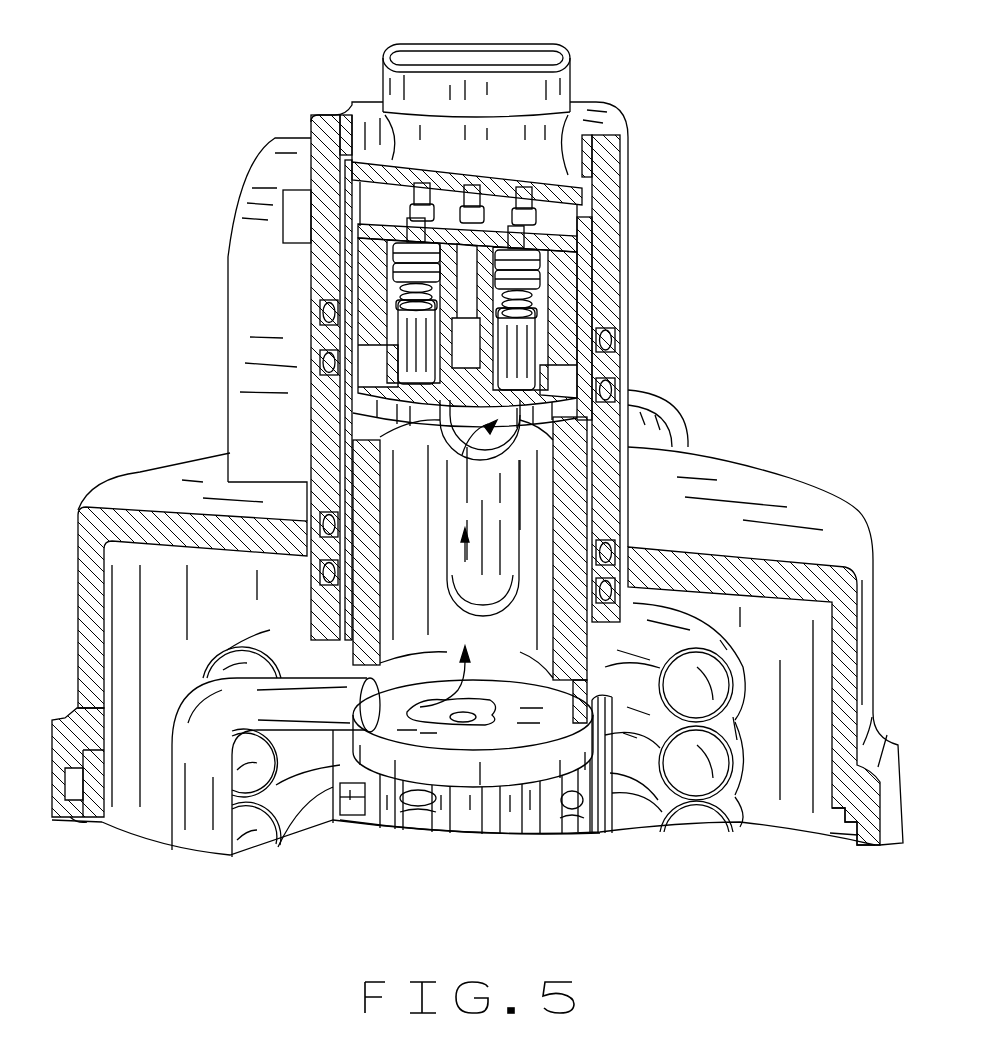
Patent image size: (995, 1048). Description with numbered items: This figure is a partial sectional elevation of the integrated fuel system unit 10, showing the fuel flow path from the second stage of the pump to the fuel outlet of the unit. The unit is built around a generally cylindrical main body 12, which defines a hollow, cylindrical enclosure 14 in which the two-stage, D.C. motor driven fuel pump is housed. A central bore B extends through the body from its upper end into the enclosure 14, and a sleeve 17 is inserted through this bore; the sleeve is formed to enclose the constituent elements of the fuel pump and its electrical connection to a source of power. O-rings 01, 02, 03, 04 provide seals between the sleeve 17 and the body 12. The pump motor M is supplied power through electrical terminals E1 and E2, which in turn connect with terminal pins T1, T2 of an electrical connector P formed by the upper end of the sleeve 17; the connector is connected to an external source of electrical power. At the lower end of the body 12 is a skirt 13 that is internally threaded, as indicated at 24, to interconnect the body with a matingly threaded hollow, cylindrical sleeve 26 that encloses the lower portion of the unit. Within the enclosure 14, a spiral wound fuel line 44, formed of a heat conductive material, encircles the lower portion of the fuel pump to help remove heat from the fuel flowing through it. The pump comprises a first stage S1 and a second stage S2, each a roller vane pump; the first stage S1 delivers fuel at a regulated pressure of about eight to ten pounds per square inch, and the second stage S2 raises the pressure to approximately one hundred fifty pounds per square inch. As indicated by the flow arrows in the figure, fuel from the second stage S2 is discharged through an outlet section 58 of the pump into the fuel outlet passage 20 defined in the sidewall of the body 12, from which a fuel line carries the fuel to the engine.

The integrated fuel system unit 10 is at (216, 138).
The electrical connector P is at (570, 76).
The terminal pin T2 is at (362, 162).
The electrical terminal E2 is at (353, 213).
The terminal pin T1 is at (581, 176).
The electrical terminal E1 is at (577, 223).
The O-ring 03 is at (311, 303).
The O-ring 04 is at (311, 357).
The sleeve 17 is at (311, 390).
The central bore B is at (653, 398).
The O-ring 01 is at (320, 520).
The O-ring 02 is at (305, 568).
The fuel outlet passage 20 is at (497, 454).
The main body 12 is at (793, 470).
The skirt 13 is at (52, 728).
The cylindrical enclosure 14 is at (786, 640).
The motor M is at (418, 552).
The cylindrical sleeve 26 is at (85, 812).
The second stage S2 is at (288, 805).
The first stage S1 is at (333, 810).
The outlet section 58 is at (482, 760).
The spiral wound fuel line 44 is at (750, 773).
The internal threads 24 is at (840, 813).